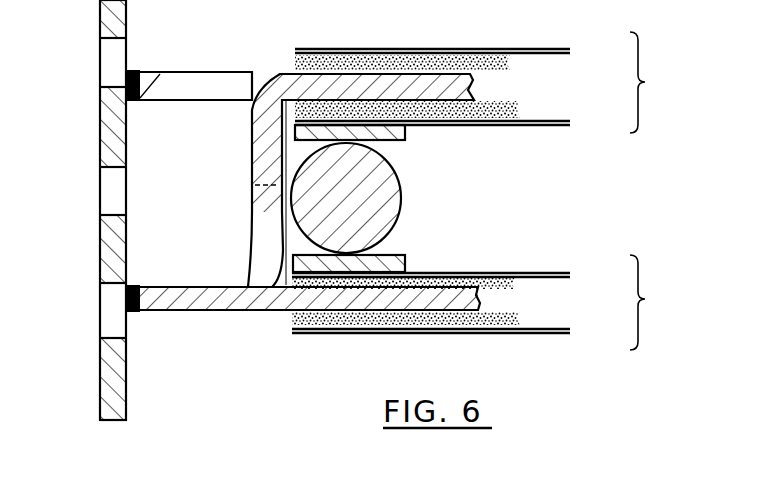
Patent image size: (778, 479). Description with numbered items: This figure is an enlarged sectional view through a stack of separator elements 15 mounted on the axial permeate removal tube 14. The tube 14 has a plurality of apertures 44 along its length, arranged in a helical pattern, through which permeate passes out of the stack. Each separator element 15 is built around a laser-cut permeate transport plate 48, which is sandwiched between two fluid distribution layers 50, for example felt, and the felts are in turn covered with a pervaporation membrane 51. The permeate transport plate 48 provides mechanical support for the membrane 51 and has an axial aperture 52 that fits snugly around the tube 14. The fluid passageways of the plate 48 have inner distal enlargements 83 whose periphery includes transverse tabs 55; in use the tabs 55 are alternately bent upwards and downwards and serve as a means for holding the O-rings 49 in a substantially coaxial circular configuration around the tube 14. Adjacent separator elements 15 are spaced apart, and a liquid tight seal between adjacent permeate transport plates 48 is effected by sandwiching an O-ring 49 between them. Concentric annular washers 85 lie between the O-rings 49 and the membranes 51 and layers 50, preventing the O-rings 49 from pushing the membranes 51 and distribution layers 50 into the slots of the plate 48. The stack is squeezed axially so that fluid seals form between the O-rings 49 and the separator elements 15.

The axial permeate removal tube 14 is at (102, 388).
The apertures 44 is at (110, 70).
The axial aperture 52 is at (130, 72).
The inner distal enlargements 83 is at (184, 86).
The permeate transport plate 48 is at (280, 70).
The tabs 55 is at (256, 150).
The O-rings 49 is at (384, 190).
The annular washers 85 is at (406, 132).
The fluid distribution layers 50 is at (500, 62).
The pervaporation membrane 51 is at (500, 48).
The separator elements 15 is at (653, 191).